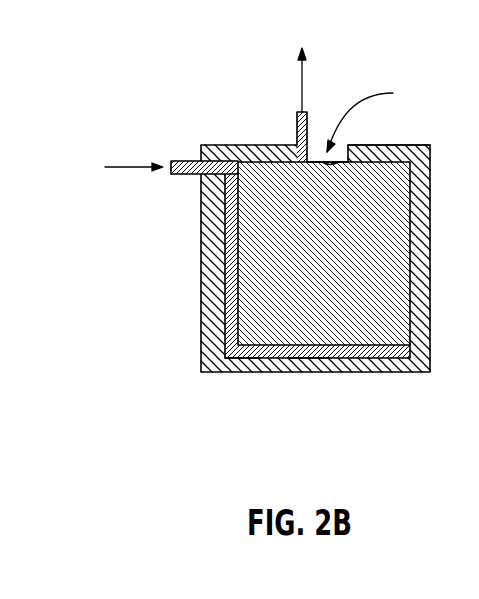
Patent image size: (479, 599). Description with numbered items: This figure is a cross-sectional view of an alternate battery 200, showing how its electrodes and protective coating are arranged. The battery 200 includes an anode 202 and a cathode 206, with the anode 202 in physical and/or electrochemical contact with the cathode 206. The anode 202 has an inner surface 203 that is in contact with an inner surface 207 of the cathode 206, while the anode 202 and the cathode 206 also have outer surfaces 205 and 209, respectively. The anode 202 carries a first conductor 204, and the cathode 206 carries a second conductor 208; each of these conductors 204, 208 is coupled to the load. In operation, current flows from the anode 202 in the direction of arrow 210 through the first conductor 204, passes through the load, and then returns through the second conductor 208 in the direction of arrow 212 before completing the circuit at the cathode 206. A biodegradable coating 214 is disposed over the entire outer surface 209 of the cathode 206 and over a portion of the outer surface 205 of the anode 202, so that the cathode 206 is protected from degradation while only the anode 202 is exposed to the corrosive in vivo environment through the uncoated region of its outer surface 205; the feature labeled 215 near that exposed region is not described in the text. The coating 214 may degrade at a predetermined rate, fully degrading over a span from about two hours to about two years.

The battery 200 is at (138, 63).
The anode 202 is at (311, 180).
The inner surface of the anode 203 is at (378, 345).
The first conductor 204 is at (297, 125).
The outer surface of the anode 205 is at (337, 163).
The cathode 206 is at (307, 353).
The inner surface of the cathode 207 is at (263, 335).
The second conductor 208 is at (182, 175).
The outer surface of the cathode 209 is at (243, 360).
The arrow 210 is at (300, 68).
The arrow 212 is at (133, 165).
The biodegradable coating 214 is at (202, 340).
The flow into opening 215 is at (379, 116).